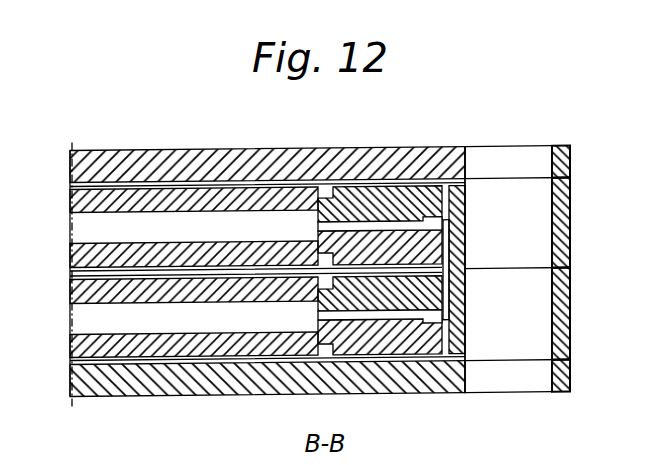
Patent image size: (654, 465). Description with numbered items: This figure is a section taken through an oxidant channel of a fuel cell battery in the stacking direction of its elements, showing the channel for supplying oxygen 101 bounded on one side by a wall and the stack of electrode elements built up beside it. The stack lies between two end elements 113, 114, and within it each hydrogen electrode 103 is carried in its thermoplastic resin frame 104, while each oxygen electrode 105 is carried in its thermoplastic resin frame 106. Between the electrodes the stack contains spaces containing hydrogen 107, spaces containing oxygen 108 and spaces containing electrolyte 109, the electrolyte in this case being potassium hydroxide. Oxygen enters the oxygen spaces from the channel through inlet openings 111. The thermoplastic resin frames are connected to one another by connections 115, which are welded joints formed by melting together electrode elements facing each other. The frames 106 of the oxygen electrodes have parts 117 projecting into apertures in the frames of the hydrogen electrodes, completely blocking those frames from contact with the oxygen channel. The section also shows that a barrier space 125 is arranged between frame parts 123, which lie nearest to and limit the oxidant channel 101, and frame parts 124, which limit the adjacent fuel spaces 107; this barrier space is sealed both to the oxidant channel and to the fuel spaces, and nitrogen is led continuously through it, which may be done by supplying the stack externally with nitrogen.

The channel for supplying oxygen 101 is at (522, 156).
The hydrogen electrode 103 is at (88, 245).
The thermoplastic resin frame 104 is at (330, 238).
The oxygen electrode 105 is at (92, 196).
The thermoplastic resin frame 106 is at (460, 201).
The space containing hydrogen 107 is at (88, 268).
The space containing oxygen 108 is at (78, 178).
The space containing electrolyte 109 is at (88, 223).
The inlet opening for oxygen 111 is at (467, 178).
The end element 113 is at (100, 162).
The end element 114 is at (113, 381).
The connection between thermoplastic resin frames 115 is at (424, 194).
The projecting part 117 is at (458, 221).
The frame part 123 is at (455, 244).
The frame part 124 is at (370, 236).
The barrier space 125 is at (430, 176).